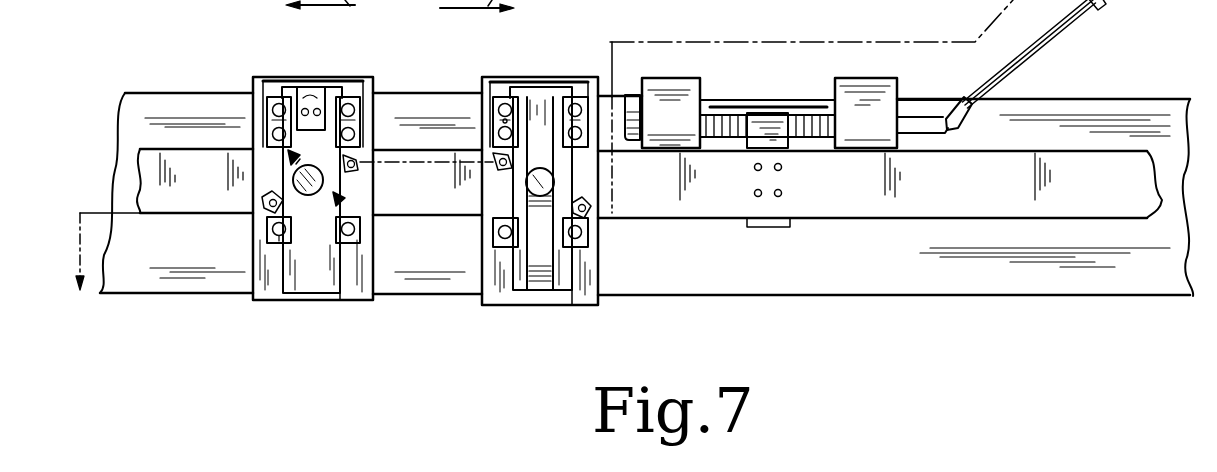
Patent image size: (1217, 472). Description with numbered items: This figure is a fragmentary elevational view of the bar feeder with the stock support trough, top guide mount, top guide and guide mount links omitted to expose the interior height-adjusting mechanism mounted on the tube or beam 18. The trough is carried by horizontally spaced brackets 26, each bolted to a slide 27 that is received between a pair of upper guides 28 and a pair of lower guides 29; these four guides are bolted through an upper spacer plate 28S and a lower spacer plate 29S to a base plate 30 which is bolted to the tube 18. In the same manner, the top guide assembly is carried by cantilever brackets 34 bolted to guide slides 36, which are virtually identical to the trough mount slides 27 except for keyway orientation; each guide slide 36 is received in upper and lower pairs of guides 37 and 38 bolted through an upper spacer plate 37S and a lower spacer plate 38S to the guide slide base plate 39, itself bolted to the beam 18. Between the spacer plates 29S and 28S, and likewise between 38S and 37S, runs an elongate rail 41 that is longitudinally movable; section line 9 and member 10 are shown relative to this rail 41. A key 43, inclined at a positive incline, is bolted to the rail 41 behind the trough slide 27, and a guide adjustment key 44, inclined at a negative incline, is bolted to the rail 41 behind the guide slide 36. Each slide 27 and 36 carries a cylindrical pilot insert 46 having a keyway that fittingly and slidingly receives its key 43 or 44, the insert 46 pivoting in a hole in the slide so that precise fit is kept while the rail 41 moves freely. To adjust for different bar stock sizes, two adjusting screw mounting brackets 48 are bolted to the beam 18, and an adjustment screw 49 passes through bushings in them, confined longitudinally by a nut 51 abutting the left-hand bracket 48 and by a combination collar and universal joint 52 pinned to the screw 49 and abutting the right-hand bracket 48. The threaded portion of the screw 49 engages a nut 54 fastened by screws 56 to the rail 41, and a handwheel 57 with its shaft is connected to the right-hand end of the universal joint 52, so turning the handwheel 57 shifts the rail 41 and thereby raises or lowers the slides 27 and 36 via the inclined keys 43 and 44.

The section line 9 is at (101, 253).
The guide member 10 is at (382, 175).
The tube 18 is at (152, 92).
The bracket 26 is at (543, 293).
The slide 27 is at (573, 293).
The upper guide 28 is at (518, 120).
The upper spacer plate 28S is at (487, 105).
The lower guide 29 is at (493, 233).
The lower spacer plate 29S is at (600, 296).
The base plate 30 is at (542, 88).
The cantilever bracket 34 is at (314, 93).
The guide slide 36 is at (310, 293).
The upper guide 37 is at (338, 141).
The upper spacer plate 37S is at (262, 105).
The lower guide 38 is at (266, 230).
The lower spacer plate 38S is at (360, 293).
The guide slide base plate 39 is at (282, 78).
The rail 41 is at (193, 200).
The key 43 is at (592, 207).
The guide adjustment key 44 is at (266, 204).
The cylindrical pilot insert 46 is at (333, 243).
The adjusting screw mounting bracket 48 is at (693, 78).
The adjustment screw 49 is at (727, 118).
The nut 51 is at (628, 95).
The combination collar and universal joint 52 is at (923, 117).
The nut 54 is at (773, 113).
The screws 56 is at (783, 193).
The handwheel 57 is at (1093, 12).